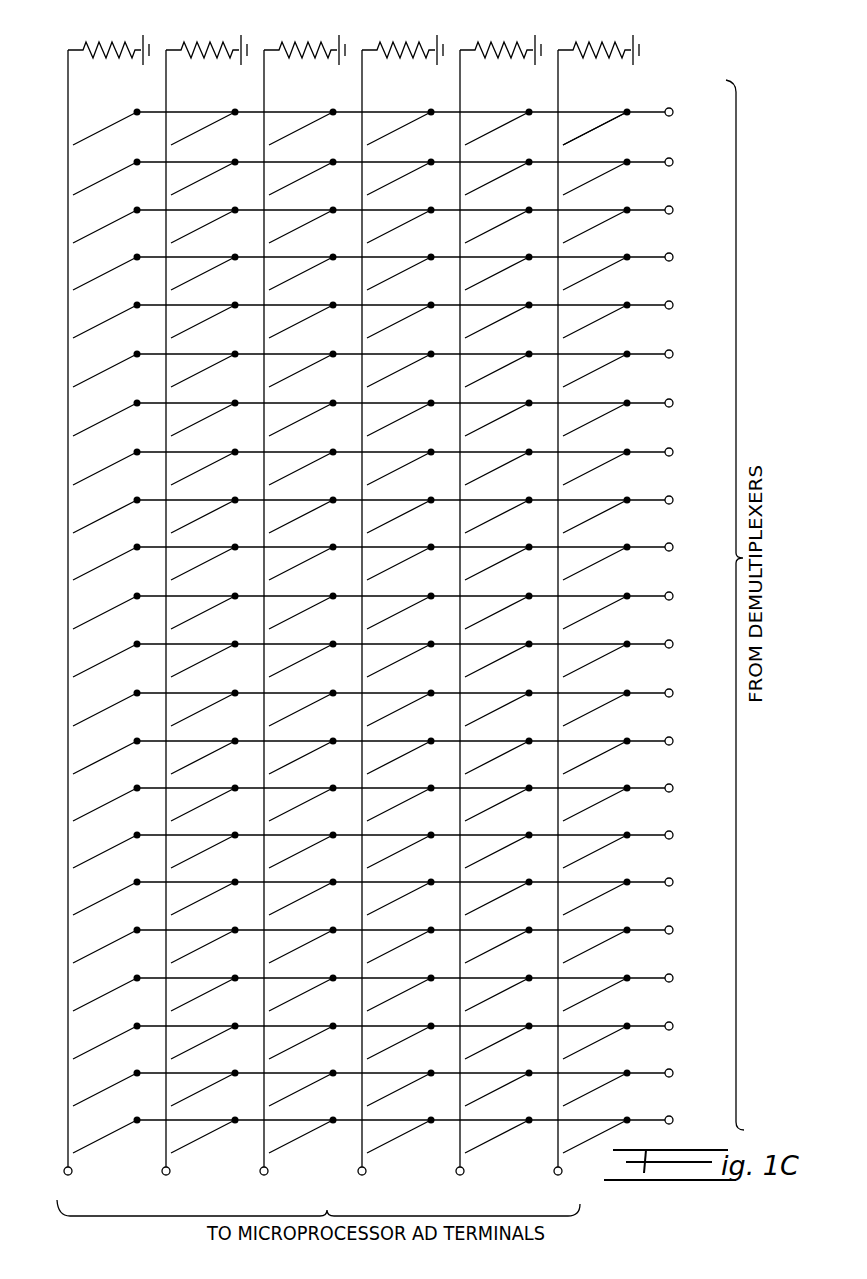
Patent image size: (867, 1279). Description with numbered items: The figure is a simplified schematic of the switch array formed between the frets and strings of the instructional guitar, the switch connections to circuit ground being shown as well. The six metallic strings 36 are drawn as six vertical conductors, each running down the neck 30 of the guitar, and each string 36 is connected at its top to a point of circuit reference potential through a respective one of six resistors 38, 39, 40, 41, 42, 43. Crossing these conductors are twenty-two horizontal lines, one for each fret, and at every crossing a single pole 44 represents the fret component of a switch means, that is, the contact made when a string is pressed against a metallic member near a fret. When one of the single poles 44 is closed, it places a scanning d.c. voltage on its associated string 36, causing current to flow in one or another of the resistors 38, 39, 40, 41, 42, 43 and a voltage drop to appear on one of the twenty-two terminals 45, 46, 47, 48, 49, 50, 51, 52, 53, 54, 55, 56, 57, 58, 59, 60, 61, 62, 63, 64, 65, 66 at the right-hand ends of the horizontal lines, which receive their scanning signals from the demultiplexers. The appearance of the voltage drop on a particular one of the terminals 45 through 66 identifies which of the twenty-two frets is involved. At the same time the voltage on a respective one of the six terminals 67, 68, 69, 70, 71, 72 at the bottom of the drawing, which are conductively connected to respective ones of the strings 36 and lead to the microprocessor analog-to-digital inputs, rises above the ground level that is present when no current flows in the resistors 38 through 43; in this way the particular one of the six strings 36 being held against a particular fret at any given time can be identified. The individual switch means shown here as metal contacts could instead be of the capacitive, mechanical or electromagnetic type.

The neck 30 is at (68, 396).
The strings 36 is at (339, 608).
The resistor 38 is at (108, 33).
The resistor 39 is at (206, 33).
The resistor 40 is at (304, 33).
The resistor 41 is at (402, 33).
The resistor 42 is at (500, 33).
The resistor 43 is at (598, 33).
The single pole 44 is at (596, 128).
The terminal 45 is at (673, 112).
The terminal 46 is at (673, 162).
The terminal 47 is at (673, 210).
The terminal 48 is at (673, 257).
The terminal 49 is at (673, 305).
The terminal 50 is at (673, 354).
The terminal 51 is at (673, 403).
The terminal 52 is at (673, 452).
The terminal 53 is at (673, 500).
The terminal 54 is at (673, 547).
The terminal 55 is at (673, 596).
The terminal 56 is at (673, 644).
The terminal 57 is at (673, 693).
The terminal 58 is at (673, 741).
The terminal 59 is at (673, 788).
The terminal 60 is at (673, 835).
The terminal 61 is at (673, 882).
The terminal 62 is at (673, 930).
The terminal 63 is at (673, 978).
The terminal 64 is at (673, 1026).
The terminal 65 is at (673, 1073).
The terminal 66 is at (673, 1120).
The terminal 67 is at (98, 1189).
The terminal 68 is at (196, 1189).
The terminal 69 is at (294, 1189).
The terminal 70 is at (392, 1189).
The terminal 71 is at (490, 1189).
The terminal 72 is at (588, 1189).